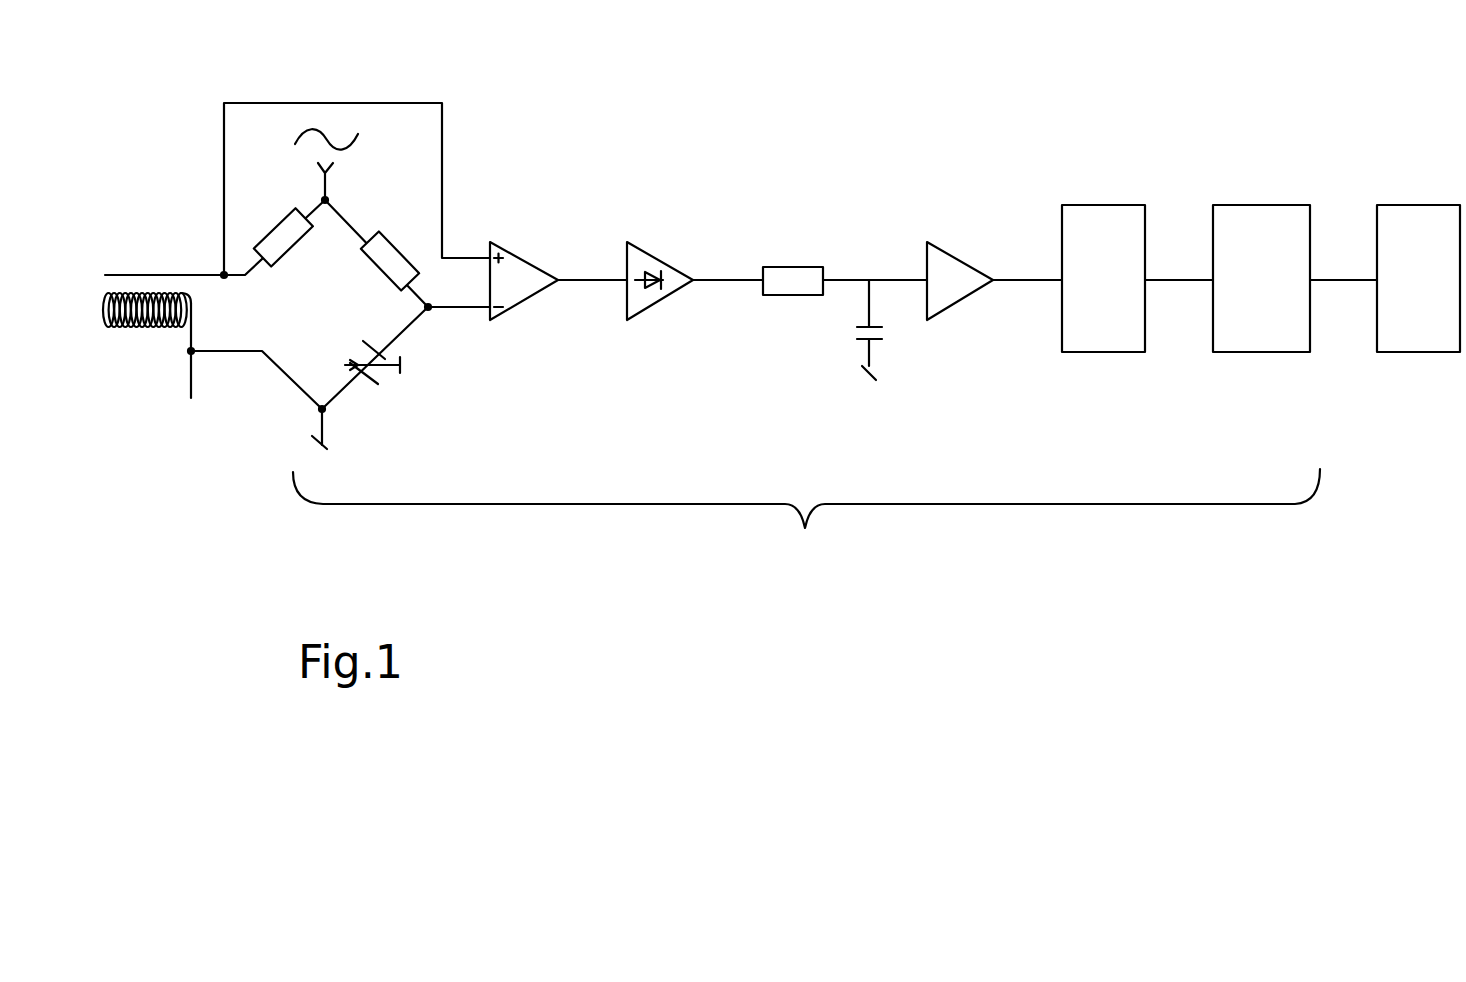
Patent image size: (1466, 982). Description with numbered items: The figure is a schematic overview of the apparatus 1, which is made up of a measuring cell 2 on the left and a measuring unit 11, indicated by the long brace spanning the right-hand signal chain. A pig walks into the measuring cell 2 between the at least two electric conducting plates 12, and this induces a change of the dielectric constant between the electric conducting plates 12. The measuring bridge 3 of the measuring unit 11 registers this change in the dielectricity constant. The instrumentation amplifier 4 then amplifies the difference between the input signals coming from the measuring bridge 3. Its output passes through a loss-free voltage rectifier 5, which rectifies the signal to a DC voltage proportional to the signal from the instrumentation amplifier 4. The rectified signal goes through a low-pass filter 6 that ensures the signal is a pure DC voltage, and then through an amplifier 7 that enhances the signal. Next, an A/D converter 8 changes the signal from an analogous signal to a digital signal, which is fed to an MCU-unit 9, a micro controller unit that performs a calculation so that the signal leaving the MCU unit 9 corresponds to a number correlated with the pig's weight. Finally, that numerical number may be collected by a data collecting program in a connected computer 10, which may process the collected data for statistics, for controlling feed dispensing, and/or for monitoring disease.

The apparatus 1 is at (680, 132).
The measuring cell 2 is at (202, 412).
The measuring bridge 3 is at (367, 430).
The instrumentation amplifier 4 is at (527, 260).
The loss-free voltage rectifier 5 is at (665, 260).
The low-pass filter 6 is at (855, 332).
The amplifier 7 is at (960, 258).
The A/D converter 8 is at (1100, 205).
The MCU-unit 9 is at (1257, 205).
The computer 10 is at (1417, 205).
The measuring unit 11 is at (806, 519).
The electric conducting plates 12 is at (191, 362).